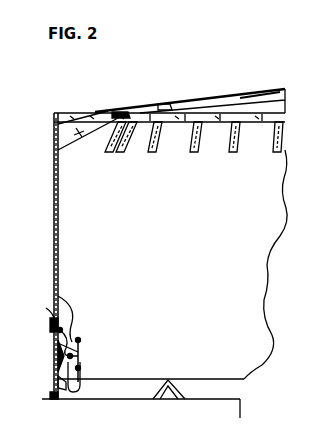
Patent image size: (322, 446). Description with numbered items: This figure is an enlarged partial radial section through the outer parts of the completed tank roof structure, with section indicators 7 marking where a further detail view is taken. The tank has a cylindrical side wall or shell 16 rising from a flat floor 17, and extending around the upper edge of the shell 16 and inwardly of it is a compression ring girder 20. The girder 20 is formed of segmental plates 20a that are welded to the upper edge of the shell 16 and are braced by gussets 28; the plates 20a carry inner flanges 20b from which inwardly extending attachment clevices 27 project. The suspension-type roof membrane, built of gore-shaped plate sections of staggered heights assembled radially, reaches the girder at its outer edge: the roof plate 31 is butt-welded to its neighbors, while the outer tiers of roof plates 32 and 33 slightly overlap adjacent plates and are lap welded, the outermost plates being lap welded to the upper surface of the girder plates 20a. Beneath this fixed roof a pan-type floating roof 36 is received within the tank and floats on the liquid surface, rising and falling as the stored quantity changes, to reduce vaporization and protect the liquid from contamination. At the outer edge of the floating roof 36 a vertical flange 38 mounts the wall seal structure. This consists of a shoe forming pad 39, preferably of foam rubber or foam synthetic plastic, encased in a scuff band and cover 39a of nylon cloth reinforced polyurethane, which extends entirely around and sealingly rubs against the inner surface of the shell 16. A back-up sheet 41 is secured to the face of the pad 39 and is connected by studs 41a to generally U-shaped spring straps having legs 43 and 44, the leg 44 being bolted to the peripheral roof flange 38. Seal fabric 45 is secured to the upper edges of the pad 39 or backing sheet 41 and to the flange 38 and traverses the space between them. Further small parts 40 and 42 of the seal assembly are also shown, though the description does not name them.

The section line 7- 7 is at (134, 92).
The shell 16 is at (58, 258).
The floor 17 is at (198, 400).
The compression ring girder 20 is at (49, 104).
The segmental plates 20a is at (84, 112).
The inner flanges 20b is at (125, 109).
The attachment clevices 27 is at (109, 130).
The gussets 28 is at (60, 148).
The roof plate 31 is at (258, 98).
The roof plate 32 is at (160, 103).
The roof plate 33 is at (193, 104).
The floating roof 36 is at (148, 379).
The vertical flange 38 is at (80, 350).
The shoe forming pad 39 is at (50, 334).
The scuff band and cover 39a is at (47, 310).
The stop 40 is at (58, 380).
The back-up sheet 41 is at (79, 340).
The studs 41a is at (80, 352).
The cam 42 is at (58, 372).
The spring strap leg 43 is at (54, 393).
The spring strap leg 44 is at (80, 370).
The seal fabric 45 is at (63, 290).